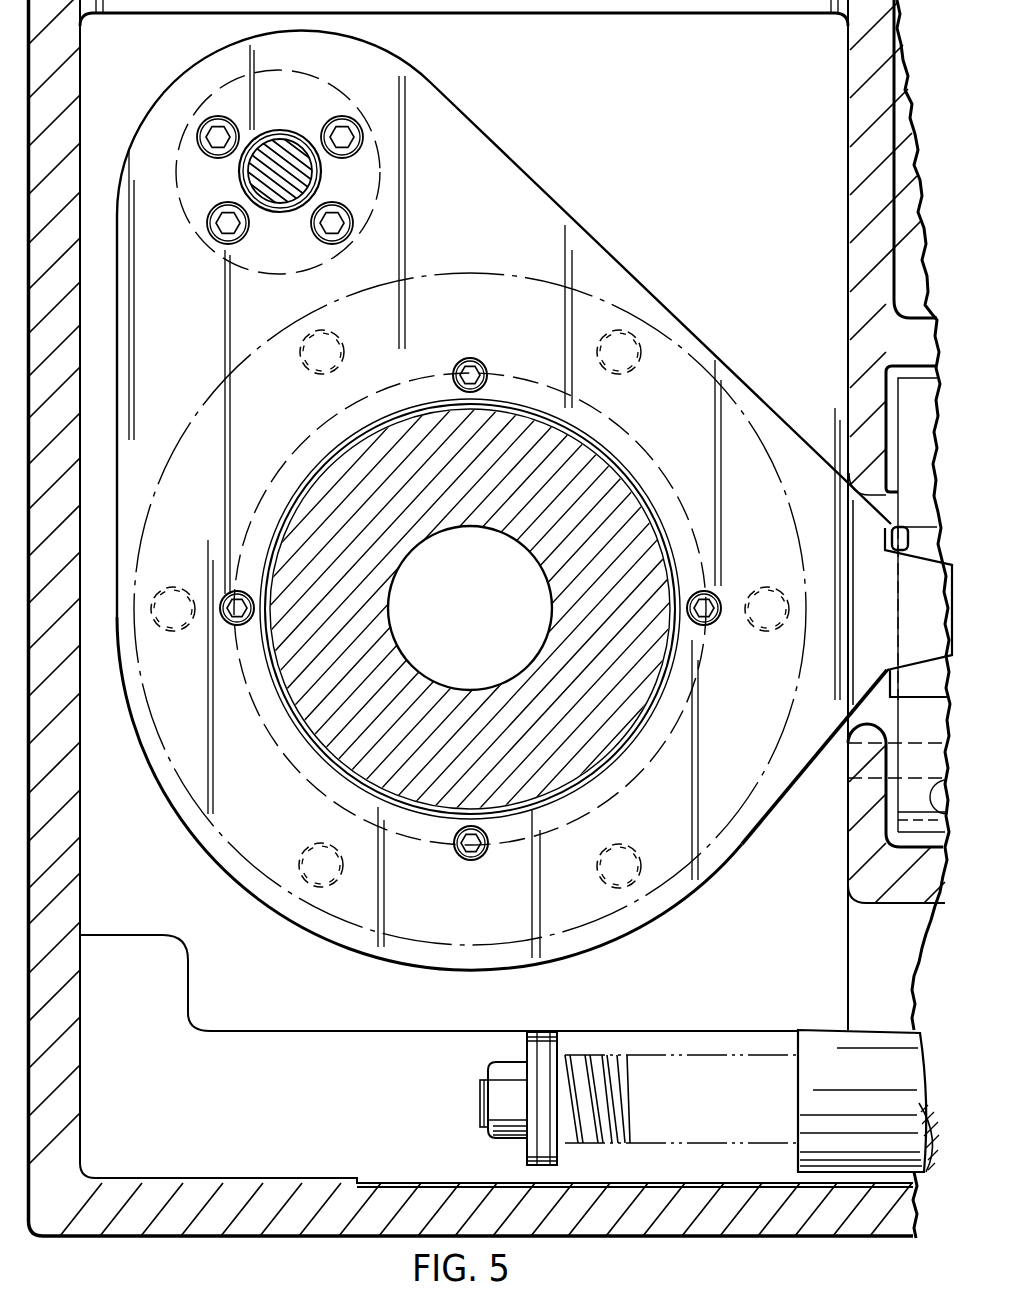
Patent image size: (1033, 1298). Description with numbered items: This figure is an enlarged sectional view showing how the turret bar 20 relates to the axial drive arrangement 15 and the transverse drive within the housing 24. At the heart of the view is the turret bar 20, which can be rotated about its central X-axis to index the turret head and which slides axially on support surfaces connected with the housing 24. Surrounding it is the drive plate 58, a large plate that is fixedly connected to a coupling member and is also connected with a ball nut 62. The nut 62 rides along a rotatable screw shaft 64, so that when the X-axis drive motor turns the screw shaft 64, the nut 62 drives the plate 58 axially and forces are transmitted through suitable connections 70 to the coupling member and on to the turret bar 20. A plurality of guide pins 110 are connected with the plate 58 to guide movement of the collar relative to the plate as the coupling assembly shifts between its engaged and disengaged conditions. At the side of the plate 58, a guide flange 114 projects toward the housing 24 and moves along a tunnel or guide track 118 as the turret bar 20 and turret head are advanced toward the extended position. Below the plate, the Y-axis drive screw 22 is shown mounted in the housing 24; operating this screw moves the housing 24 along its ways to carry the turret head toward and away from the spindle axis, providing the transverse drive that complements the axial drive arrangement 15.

The axial drive arrangement 15 is at (265, 153).
The ball nut 62 is at (348, 106).
The screw shaft 64 is at (284, 148).
The housing 24 is at (499, 13).
The drive plate 58 is at (620, 255).
The turret bar 20 is at (515, 530).
The connections 70 is at (486, 350).
The guide pins 110 is at (314, 372).
The guide track 118 is at (890, 537).
The guide flange 114 is at (935, 598).
The Y-axis drive screw 22 is at (672, 1052).